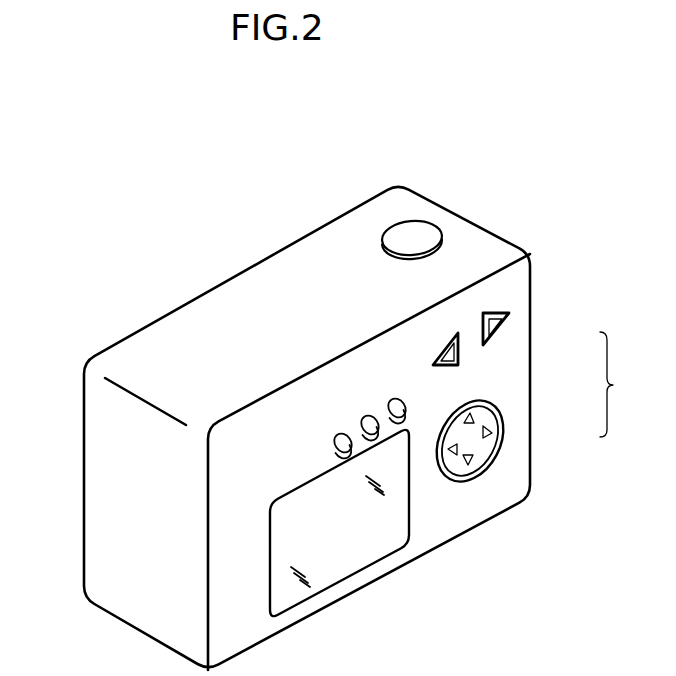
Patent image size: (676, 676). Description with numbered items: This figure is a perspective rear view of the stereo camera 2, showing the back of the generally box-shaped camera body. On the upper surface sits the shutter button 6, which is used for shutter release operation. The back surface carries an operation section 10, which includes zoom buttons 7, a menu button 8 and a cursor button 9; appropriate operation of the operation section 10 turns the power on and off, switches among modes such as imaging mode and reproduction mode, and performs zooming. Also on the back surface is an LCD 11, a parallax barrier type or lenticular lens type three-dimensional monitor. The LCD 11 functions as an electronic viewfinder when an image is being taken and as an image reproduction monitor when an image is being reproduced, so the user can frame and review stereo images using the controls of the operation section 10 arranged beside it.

The stereo camera 2 is at (88, 259).
The shutter button 6 is at (398, 232).
The zoom buttons 7 is at (497, 326).
The menu button 8 is at (407, 407).
The cursor button 9 is at (493, 433).
The operation section 10 is at (629, 384).
The LCD 11 is at (345, 568).